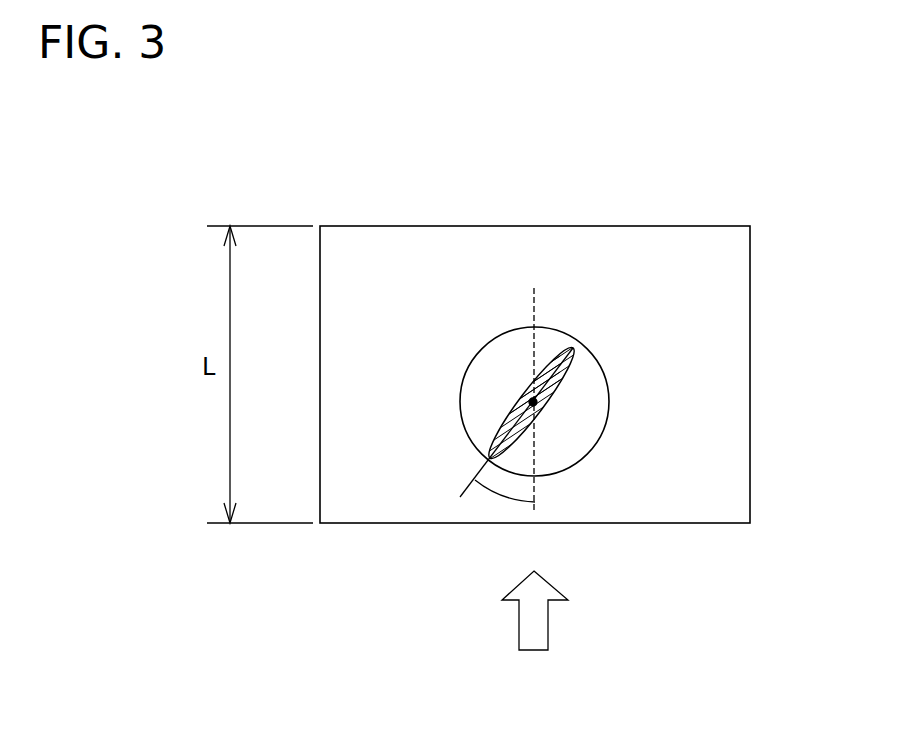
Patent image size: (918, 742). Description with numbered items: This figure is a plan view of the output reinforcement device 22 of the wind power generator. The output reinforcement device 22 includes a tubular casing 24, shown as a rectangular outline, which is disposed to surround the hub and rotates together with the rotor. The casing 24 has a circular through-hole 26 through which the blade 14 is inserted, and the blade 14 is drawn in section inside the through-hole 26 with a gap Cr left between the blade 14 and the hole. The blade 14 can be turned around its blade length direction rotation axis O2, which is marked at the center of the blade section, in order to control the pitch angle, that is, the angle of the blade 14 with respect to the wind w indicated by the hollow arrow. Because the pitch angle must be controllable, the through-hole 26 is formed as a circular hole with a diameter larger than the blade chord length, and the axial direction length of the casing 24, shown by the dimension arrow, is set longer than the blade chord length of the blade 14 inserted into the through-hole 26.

The output reinforcement device 22 is at (551, 131).
The casing 24 is at (750, 349).
The through-hole 26 is at (567, 333).
The blade 14 is at (555, 384).
The blade length direction rotation axis O2 is at (532, 386).
The gap Cr is at (473, 386).
The inclination angle B is at (503, 497).
The wind W is at (548, 625).